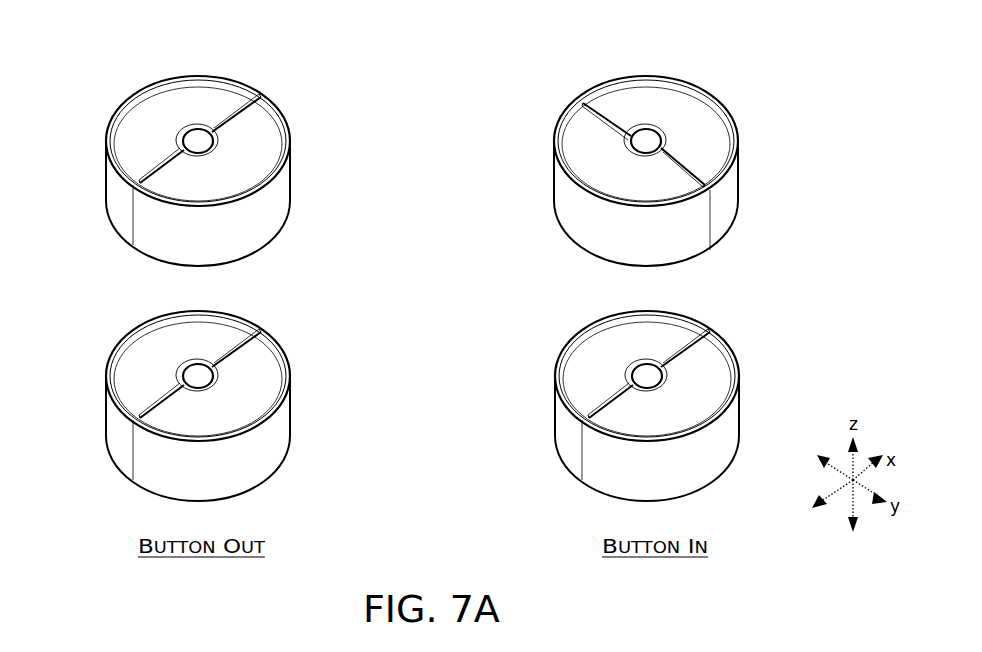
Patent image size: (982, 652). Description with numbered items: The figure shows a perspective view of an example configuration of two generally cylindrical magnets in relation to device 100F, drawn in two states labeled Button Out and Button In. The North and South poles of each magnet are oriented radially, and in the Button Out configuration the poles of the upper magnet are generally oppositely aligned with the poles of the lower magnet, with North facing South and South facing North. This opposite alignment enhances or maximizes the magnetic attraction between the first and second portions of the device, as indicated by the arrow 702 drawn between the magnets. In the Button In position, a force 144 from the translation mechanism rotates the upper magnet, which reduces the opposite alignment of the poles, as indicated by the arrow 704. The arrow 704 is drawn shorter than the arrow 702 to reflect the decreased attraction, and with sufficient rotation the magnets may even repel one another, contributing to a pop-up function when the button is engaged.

The device 100F is at (199, 31).
The force 144 is at (447, 197).
The arrow 702 is at (160, 269).
The arrow 704 is at (612, 277).